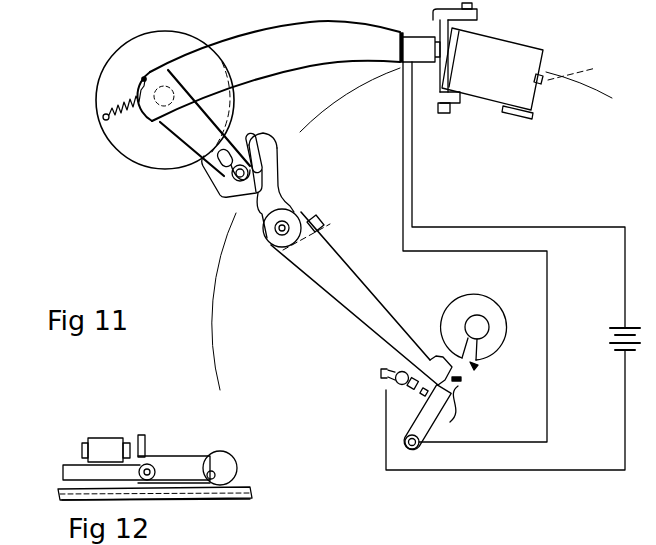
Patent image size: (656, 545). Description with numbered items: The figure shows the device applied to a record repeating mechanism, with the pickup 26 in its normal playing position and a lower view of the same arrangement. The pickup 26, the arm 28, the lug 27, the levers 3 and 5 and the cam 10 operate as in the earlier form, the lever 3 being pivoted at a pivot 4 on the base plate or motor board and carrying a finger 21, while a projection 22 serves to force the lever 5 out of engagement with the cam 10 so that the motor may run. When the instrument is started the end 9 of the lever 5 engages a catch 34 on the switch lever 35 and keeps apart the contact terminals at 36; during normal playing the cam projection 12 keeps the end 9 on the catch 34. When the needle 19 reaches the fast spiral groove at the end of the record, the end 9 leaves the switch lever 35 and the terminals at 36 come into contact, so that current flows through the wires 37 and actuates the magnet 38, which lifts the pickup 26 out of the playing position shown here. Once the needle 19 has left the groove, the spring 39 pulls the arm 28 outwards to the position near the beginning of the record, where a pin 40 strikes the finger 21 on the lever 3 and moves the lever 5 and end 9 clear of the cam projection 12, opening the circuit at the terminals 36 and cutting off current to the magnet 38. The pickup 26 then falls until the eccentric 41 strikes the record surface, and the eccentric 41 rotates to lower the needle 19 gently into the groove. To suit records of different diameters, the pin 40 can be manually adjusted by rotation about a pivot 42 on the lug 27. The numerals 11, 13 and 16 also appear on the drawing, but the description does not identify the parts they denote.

In FIG. 11, the lever 3 is at (268, 198).
In FIG. 11, the pivot 4 is at (278, 236).
In FIG. 11, the lever 5 is at (361, 298).
In FIG. 11, the end 9 is at (440, 355).
In FIG. 11, the cam 10 is at (489, 312).
In FIG. 11, the shaft 11 is at (478, 326).
In FIG. 11, the cam projection 12 is at (226, 150).
In FIG. 12, the base 13 is at (250, 492).
In FIG. 11, the pivot pin 16 is at (207, 173).
In FIG. 11, the needle 19 is at (579, 67).
In FIG. 12, the needle 19 is at (226, 487).
In FIG. 11, the finger 21 is at (268, 174).
In FIG. 11, the projection 22 is at (322, 222).
In FIG. 11, the pickup 26 is at (505, 52).
In FIG. 12, the pickup 26 is at (160, 458).
In FIG. 11, the lug 27 is at (172, 138).
In FIG. 11, the arm 28 is at (345, 46).
In FIG. 12, the arm 28 is at (68, 466).
In FIG. 11, the catch 34 is at (462, 380).
In FIG. 11, the switch lever 35 is at (427, 425).
In FIG. 11, the contact terminals 36 is at (400, 392).
In FIG. 11, the wires 37 is at (503, 250).
In FIG. 11, the magnet 38 is at (425, 55).
In FIG. 12, the magnet 38 is at (108, 447).
In FIG. 11, the spring 39 is at (112, 101).
In FIG. 11, the pin 40 is at (250, 158).
In FIG. 11, the eccentric 41 is at (520, 120).
In FIG. 12, the eccentric 41 is at (229, 458).
In FIG. 11, the pivot 42 is at (230, 175).